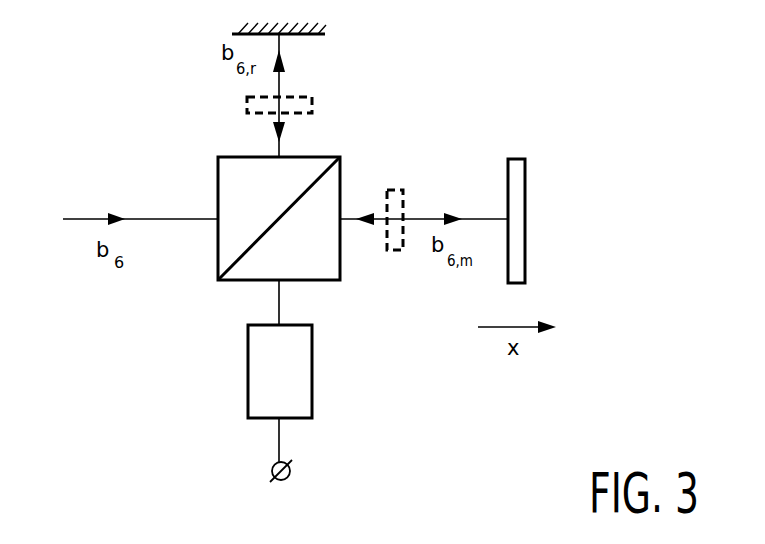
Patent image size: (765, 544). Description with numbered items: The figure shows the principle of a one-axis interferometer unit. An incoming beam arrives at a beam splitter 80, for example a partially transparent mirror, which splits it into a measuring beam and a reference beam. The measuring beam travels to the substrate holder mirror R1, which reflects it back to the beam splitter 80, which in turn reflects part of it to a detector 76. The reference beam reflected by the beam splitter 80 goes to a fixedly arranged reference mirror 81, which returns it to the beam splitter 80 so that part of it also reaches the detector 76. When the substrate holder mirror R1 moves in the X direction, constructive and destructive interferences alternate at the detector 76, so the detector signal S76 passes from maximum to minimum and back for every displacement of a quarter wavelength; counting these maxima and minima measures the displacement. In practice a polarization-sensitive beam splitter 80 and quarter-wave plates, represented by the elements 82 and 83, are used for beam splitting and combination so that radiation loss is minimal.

The detector 76 is at (248, 372).
The beam splitter 80 is at (218, 263).
The reference mirror 81 is at (318, 26).
The lambda/4 plate 82 is at (394, 188).
The lambda/4 plate 83 is at (247, 104).
The substrate holder mirror R1 is at (517, 182).
The detector signal S76 is at (268, 468).